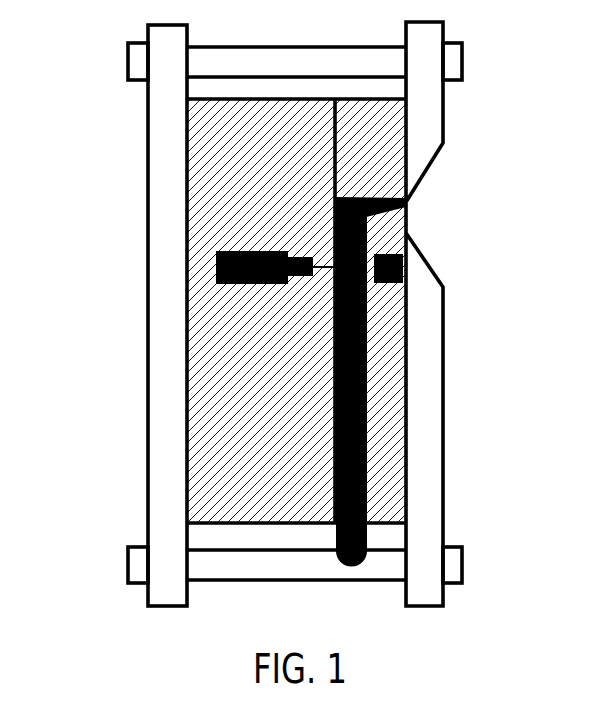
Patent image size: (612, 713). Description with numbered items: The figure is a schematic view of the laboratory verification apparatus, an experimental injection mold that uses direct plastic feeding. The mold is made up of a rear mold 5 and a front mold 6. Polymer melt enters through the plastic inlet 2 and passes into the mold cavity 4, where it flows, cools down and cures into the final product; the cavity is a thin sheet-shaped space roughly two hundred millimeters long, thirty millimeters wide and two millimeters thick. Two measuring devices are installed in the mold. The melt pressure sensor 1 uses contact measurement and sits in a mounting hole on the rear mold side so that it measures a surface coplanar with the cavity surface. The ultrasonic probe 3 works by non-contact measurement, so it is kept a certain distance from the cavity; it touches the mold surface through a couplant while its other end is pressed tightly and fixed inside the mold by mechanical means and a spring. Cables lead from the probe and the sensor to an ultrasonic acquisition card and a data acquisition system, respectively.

The melt pressure sensor 1 is at (217, 267).
The plastic inlet 2 is at (407, 204).
The ultrasonic probe 3 is at (403, 273).
The mold cavity 4 is at (370, 333).
The rear mold 5 is at (220, 402).
The front mold 6 is at (388, 405).